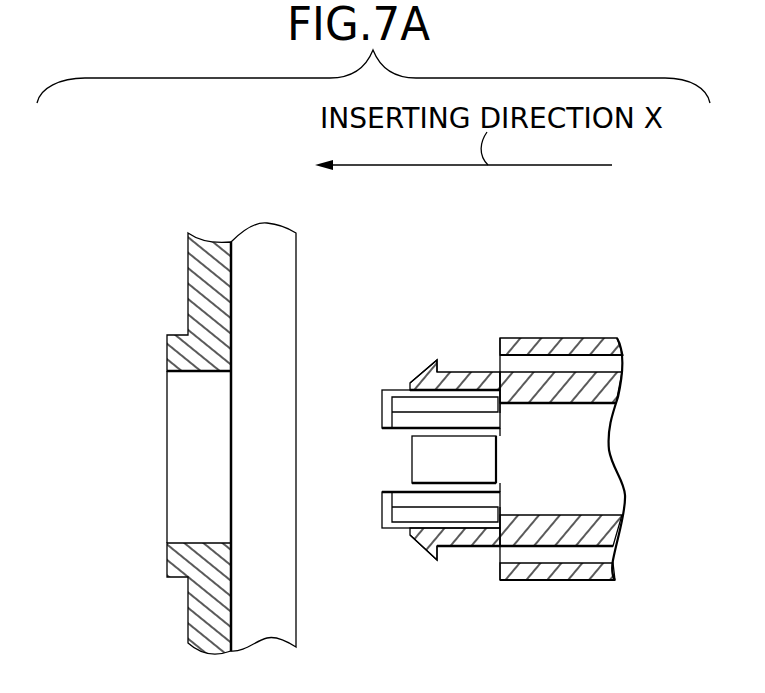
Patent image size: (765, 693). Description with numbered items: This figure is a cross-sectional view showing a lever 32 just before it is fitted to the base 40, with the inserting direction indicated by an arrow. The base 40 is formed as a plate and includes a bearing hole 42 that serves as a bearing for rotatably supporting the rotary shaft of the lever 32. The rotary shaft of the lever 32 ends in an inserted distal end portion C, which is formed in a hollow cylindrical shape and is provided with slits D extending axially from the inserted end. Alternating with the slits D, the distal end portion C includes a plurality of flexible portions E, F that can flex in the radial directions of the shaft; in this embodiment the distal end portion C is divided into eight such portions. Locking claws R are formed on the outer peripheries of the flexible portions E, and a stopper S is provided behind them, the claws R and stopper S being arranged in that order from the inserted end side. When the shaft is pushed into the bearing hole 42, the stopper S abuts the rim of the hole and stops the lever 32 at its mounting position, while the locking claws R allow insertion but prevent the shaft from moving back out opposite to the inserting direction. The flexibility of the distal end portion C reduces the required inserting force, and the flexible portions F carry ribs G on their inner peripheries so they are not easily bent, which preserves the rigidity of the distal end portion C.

The base 40 is at (213, 252).
The bearing hole 42 is at (200, 373).
The lever 32 is at (632, 382).
The inserted distal end portion C is at (553, 328).
The stopper S is at (498, 568).
The flexible portion E is at (465, 375).
The locking claw R is at (433, 361).
The flexible portion F is at (382, 405).
The rib G is at (412, 418).
The slit D is at (493, 428).